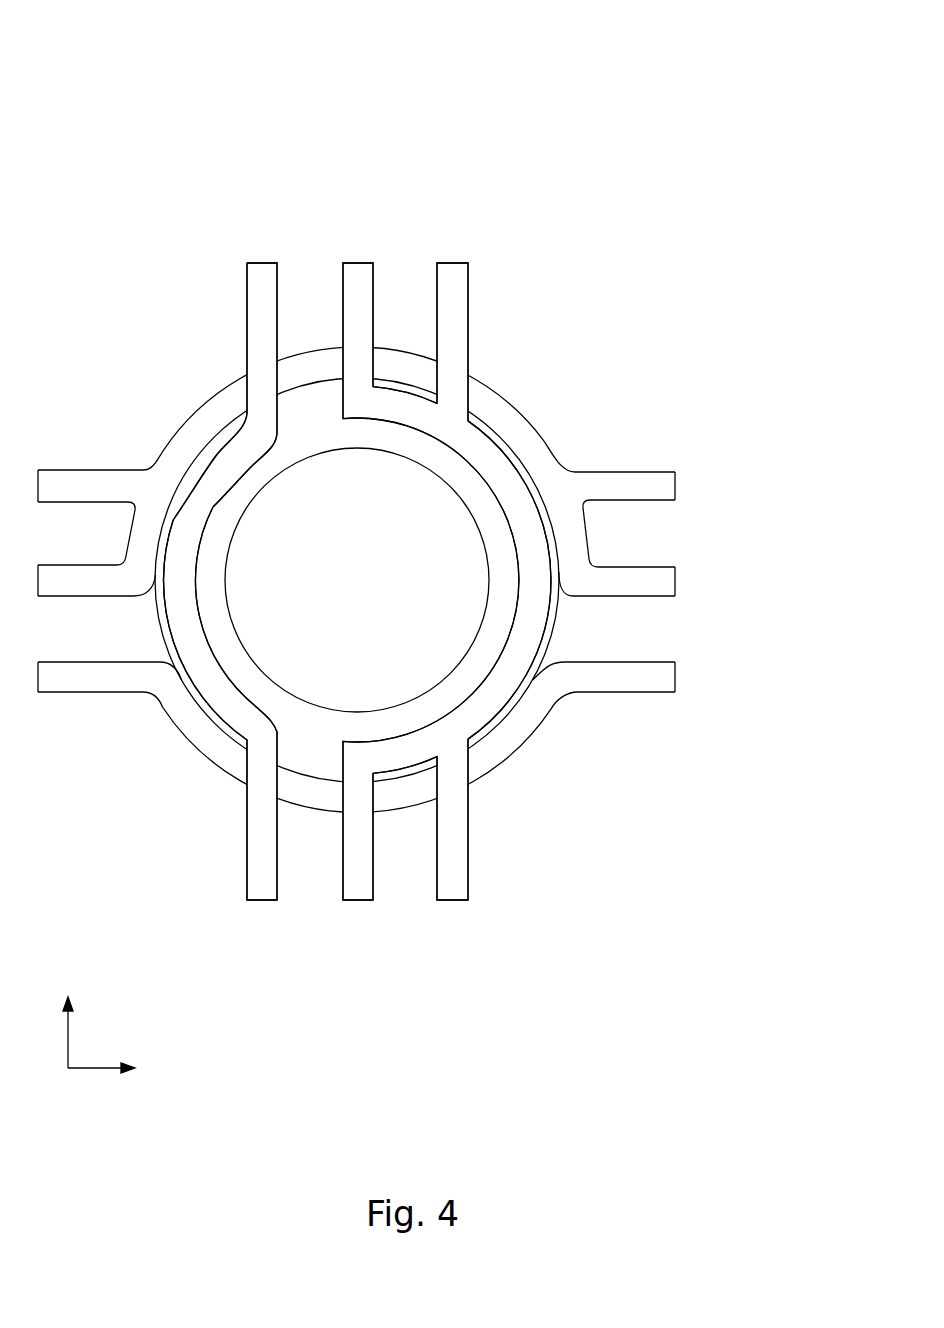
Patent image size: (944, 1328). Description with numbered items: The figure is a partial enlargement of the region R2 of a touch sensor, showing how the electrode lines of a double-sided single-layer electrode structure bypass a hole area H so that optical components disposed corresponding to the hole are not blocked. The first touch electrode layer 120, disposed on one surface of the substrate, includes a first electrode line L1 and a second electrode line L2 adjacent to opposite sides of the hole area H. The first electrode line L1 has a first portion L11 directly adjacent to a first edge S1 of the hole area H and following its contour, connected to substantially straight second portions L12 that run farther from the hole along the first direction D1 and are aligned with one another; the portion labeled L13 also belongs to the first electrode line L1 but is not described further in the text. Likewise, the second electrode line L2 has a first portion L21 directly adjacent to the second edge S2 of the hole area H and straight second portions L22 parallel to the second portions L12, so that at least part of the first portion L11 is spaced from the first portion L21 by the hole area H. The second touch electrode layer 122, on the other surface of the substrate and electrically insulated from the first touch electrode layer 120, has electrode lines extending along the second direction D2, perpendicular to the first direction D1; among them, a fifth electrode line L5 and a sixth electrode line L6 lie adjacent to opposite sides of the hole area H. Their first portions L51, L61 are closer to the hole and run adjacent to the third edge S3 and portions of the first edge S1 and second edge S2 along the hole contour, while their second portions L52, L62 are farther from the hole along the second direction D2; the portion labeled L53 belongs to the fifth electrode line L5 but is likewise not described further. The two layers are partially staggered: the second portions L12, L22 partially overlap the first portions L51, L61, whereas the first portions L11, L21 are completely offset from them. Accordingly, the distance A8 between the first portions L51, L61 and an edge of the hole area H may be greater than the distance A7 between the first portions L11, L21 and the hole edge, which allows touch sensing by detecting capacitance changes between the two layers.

The region R2 is at (140, 41).
The first touch electrode layer 120 is at (560, 221).
The second touch electrode layer 122 is at (691, 413).
The hole area H is at (366, 592).
The first electrode line L1 is at (443, 520).
The first portion of the first electrode line L11 is at (492, 440).
The second portion of the first electrode line L12 is at (357, 262).
The first lead leg L13 is at (450, 262).
The second electrode line L2 is at (232, 520).
The first portion of the second electrode line L21 is at (220, 437).
The second portion of the second electrode line L22 is at (263, 262).
The fifth electrode line L5 is at (701, 506).
The first portion of the fifth electrode line L51 is at (548, 436).
The second portion of the fifth electrode line L52 is at (664, 575).
The fifth lead slot L53 is at (670, 487).
The sixth electrode line L6 is at (696, 692).
The first portion of the sixth electrode line L61 is at (538, 697).
The second portion of the sixth electrode line L62 is at (672, 672).
The distance A7 is at (455, 668).
The distance A8 is at (471, 514).
The first edge of the hole area S1 is at (472, 578).
The second edge of the hole area S2 is at (242, 578).
The third edge of the hole area S3 is at (303, 477).
The first direction D1 is at (65, 1015).
The second direction D2 is at (123, 1069).